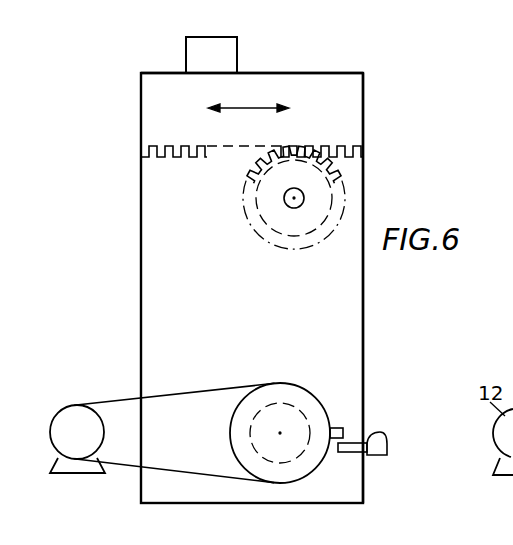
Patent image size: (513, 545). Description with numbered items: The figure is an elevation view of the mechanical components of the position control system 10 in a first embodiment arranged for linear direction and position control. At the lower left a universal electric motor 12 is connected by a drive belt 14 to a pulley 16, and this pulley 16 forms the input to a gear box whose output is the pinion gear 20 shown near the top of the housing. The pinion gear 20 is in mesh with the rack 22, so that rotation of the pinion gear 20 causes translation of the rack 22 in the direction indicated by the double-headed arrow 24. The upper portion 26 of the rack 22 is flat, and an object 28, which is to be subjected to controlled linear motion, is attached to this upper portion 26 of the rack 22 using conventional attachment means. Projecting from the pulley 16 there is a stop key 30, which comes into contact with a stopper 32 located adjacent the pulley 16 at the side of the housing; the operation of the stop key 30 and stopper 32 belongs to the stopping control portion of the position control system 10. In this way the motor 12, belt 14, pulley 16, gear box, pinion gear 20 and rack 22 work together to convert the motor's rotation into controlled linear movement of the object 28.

The position control system 10 is at (364, 316).
The universal electric motor 12 is at (75, 410).
The drive belt 14 is at (122, 395).
The pulley 16 is at (315, 412).
The pinion gear 20 is at (333, 173).
The rack 22 is at (364, 108).
The arrow 24 is at (258, 97).
The upper portion 26 is at (330, 73).
The object 28 is at (232, 55).
The stop key 30 is at (344, 425).
The stopper 32 is at (375, 456).